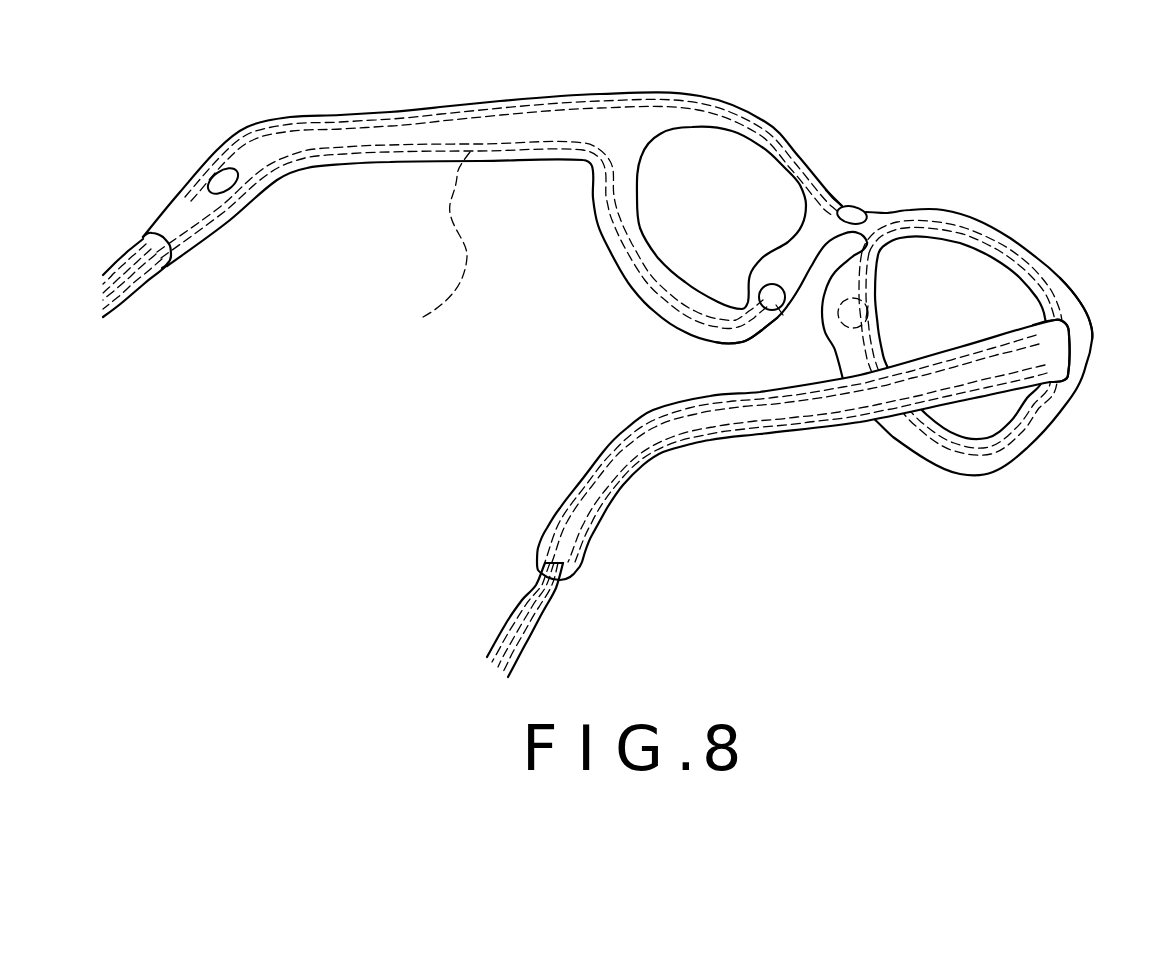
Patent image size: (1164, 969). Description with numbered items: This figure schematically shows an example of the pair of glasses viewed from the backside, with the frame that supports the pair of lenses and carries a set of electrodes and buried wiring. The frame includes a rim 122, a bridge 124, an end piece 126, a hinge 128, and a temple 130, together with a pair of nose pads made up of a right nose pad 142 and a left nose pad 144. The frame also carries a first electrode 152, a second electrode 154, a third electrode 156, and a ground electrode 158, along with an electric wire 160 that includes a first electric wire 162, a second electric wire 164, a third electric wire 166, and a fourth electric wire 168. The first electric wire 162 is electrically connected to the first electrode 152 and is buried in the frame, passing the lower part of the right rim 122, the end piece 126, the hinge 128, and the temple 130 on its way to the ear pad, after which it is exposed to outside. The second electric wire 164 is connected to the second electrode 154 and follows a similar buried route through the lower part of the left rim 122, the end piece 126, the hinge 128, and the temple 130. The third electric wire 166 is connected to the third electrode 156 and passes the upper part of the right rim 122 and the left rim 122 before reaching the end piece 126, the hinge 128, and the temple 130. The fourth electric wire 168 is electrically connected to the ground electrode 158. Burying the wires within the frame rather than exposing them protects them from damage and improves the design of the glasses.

The rim 122 is at (1007, 237).
The bridge 124 is at (857, 212).
The end piece 126 is at (1094, 333).
The hinge 128 is at (1053, 360).
The temple 130 is at (720, 498).
The right nose pad 142 is at (853, 330).
The left nose pad 144 is at (757, 278).
The first electrode 152 is at (858, 312).
The second electrode 154 is at (788, 307).
The third electrode 156 is at (858, 214).
The ground electrode 158 is at (227, 177).
The electric wire 160 is at (370, 255).
The first electric wire 162 is at (670, 440).
The second electric wire 164 is at (420, 242).
The third electric wire 166 is at (707, 410).
The fourth electric wire 168 is at (200, 208).